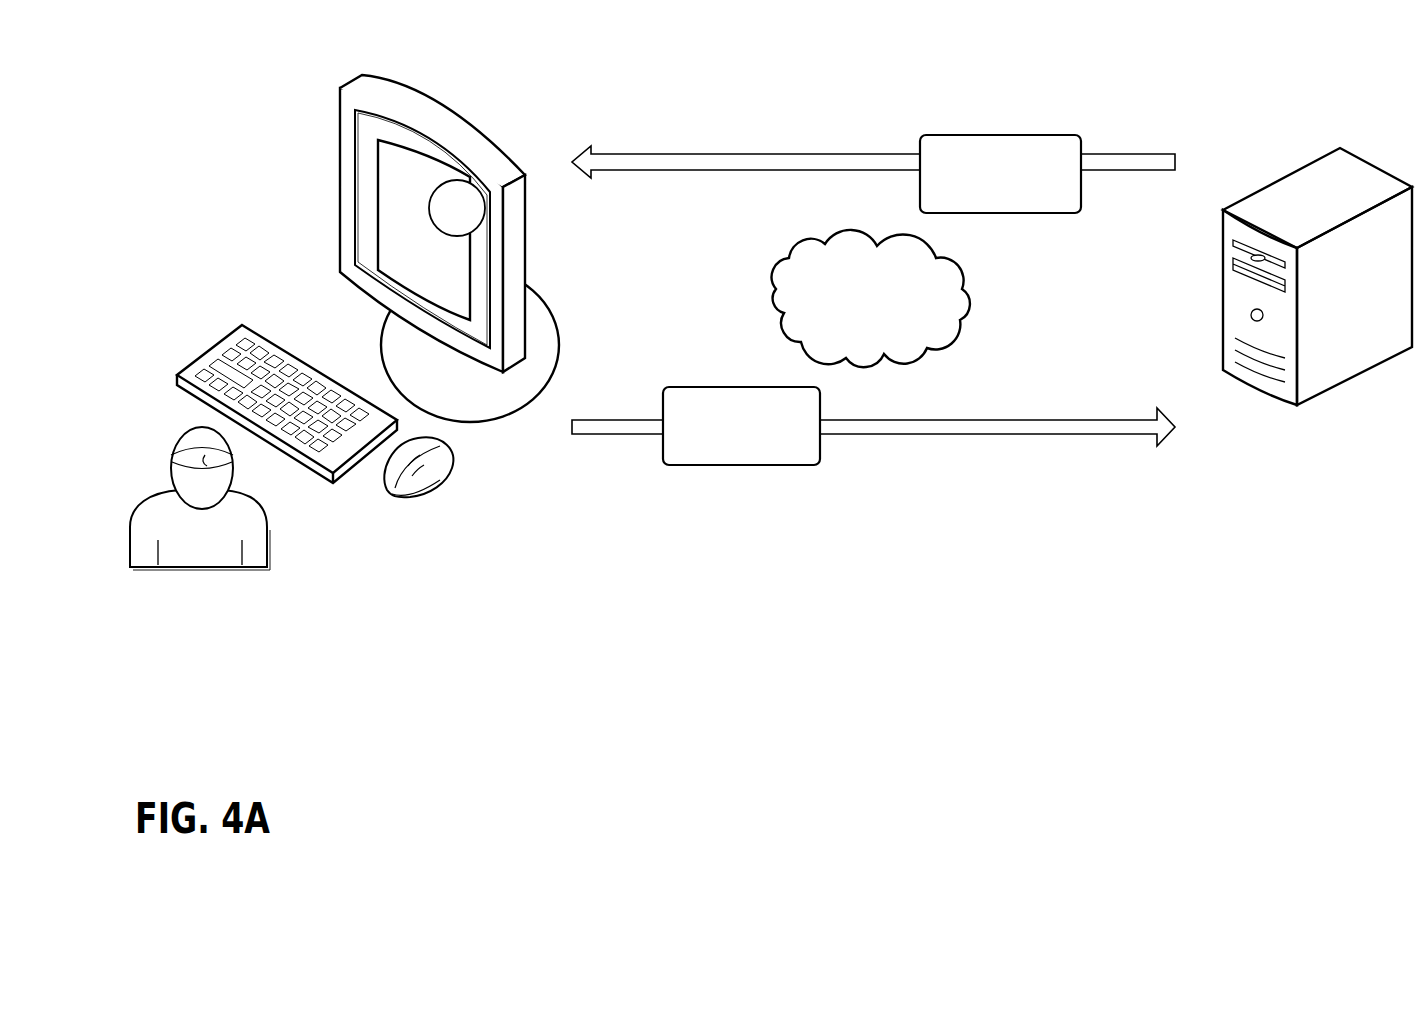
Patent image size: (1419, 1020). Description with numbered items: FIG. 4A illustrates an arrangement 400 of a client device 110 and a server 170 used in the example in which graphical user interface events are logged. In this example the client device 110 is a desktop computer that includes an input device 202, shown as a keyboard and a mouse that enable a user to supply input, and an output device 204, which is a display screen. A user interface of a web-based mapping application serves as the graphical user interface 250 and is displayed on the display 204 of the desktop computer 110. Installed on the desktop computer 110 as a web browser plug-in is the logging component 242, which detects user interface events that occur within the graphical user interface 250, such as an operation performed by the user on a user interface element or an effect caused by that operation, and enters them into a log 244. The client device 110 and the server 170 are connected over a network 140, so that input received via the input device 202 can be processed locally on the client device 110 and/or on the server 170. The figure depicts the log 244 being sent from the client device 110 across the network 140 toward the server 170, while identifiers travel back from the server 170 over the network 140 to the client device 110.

The identifier and log exchange process 400 is at (220, 771).
The client device 110 is at (294, 136).
The output device 204 is at (440, 107).
The graphical user interface 250 is at (422, 230).
The logging component 242 is at (457, 208).
The input device 202 is at (211, 343).
The network 140 is at (871, 298).
The log 244 is at (741, 426).
The server 170 is at (1357, 139).